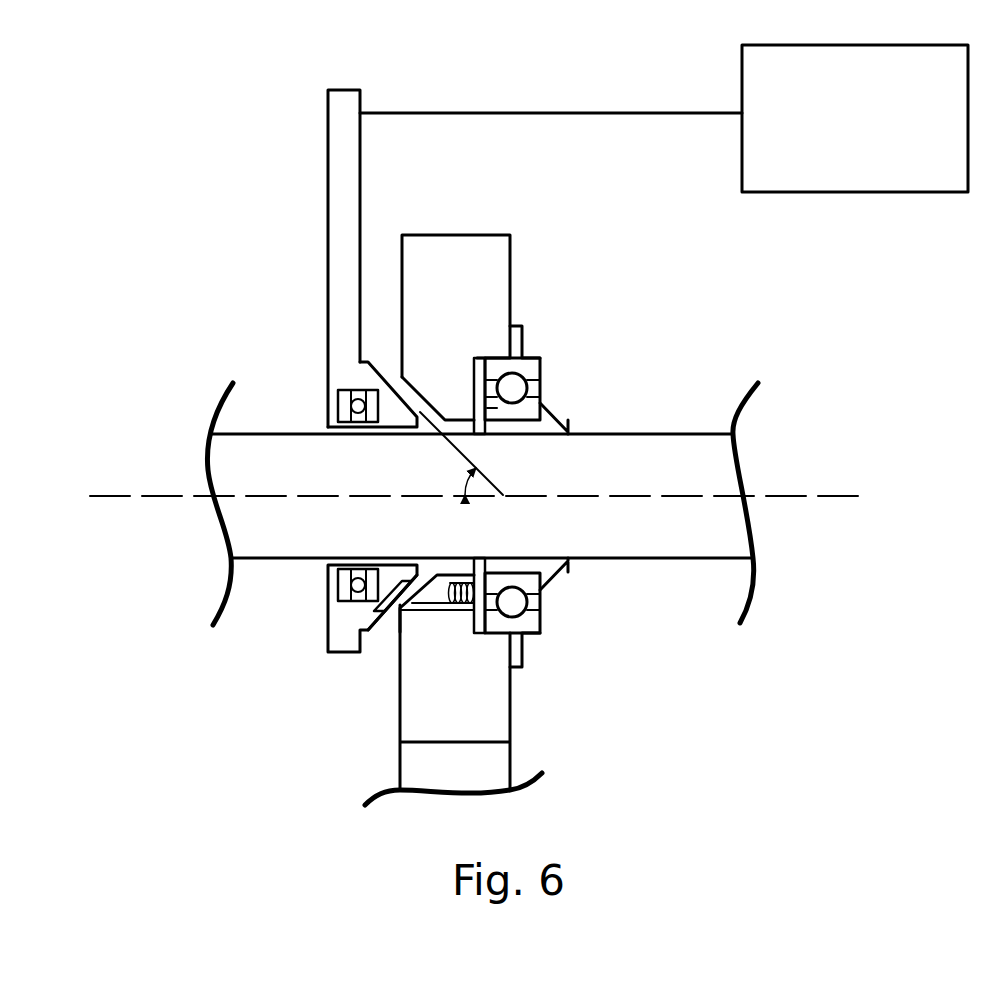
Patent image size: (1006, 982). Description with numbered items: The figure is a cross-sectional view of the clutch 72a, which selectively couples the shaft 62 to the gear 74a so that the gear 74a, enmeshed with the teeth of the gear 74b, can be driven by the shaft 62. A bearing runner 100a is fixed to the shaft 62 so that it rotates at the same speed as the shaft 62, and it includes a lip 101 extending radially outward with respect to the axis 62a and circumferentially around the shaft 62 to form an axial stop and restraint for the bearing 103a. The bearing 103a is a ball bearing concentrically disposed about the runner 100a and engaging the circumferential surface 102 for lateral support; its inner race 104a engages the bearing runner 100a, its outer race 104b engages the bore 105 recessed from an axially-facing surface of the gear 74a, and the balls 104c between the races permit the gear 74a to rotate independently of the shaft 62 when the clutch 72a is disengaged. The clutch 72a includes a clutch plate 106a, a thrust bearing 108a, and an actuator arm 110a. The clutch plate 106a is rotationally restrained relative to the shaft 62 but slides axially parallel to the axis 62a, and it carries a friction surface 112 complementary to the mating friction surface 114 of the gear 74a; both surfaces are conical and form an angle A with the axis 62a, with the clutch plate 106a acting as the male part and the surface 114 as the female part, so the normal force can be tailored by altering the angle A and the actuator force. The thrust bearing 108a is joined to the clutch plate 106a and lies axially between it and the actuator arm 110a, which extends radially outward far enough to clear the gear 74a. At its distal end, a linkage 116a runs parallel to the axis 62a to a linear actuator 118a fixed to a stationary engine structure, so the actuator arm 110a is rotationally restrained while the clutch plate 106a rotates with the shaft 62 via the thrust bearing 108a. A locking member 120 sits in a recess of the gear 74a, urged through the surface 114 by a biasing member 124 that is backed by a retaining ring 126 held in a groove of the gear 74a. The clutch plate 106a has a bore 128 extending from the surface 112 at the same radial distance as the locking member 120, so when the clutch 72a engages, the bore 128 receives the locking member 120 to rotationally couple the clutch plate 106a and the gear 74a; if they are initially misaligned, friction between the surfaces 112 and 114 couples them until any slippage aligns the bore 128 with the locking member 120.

The shaft 62 is at (252, 560).
The axis 62a is at (155, 497).
The clutch 72a is at (268, 231).
The gear 74a is at (445, 235).
The gear 74b is at (510, 762).
The bearing runner 100a is at (570, 432).
The lip 101 is at (540, 403).
The circumferential surface 102 is at (540, 437).
The bearing 103a is at (565, 345).
The inner race 104a is at (493, 410).
The outer race 104b is at (535, 343).
The balls 104c is at (540, 383).
The bore 105 is at (478, 358).
The clutch plate 106a is at (345, 392).
The thrust bearing 108a is at (327, 590).
The actuator arm 110a is at (325, 127).
The friction surface 112 is at (383, 372).
The mating friction surface 114 is at (410, 383).
The linkage 116a is at (545, 112).
The linear actuator 118a is at (855, 118).
The locking member 120 is at (430, 598).
The biasing member 124 is at (453, 608).
The retaining ring 126 is at (478, 633).
The bore 128 is at (385, 575).
The angle A is at (454, 475).